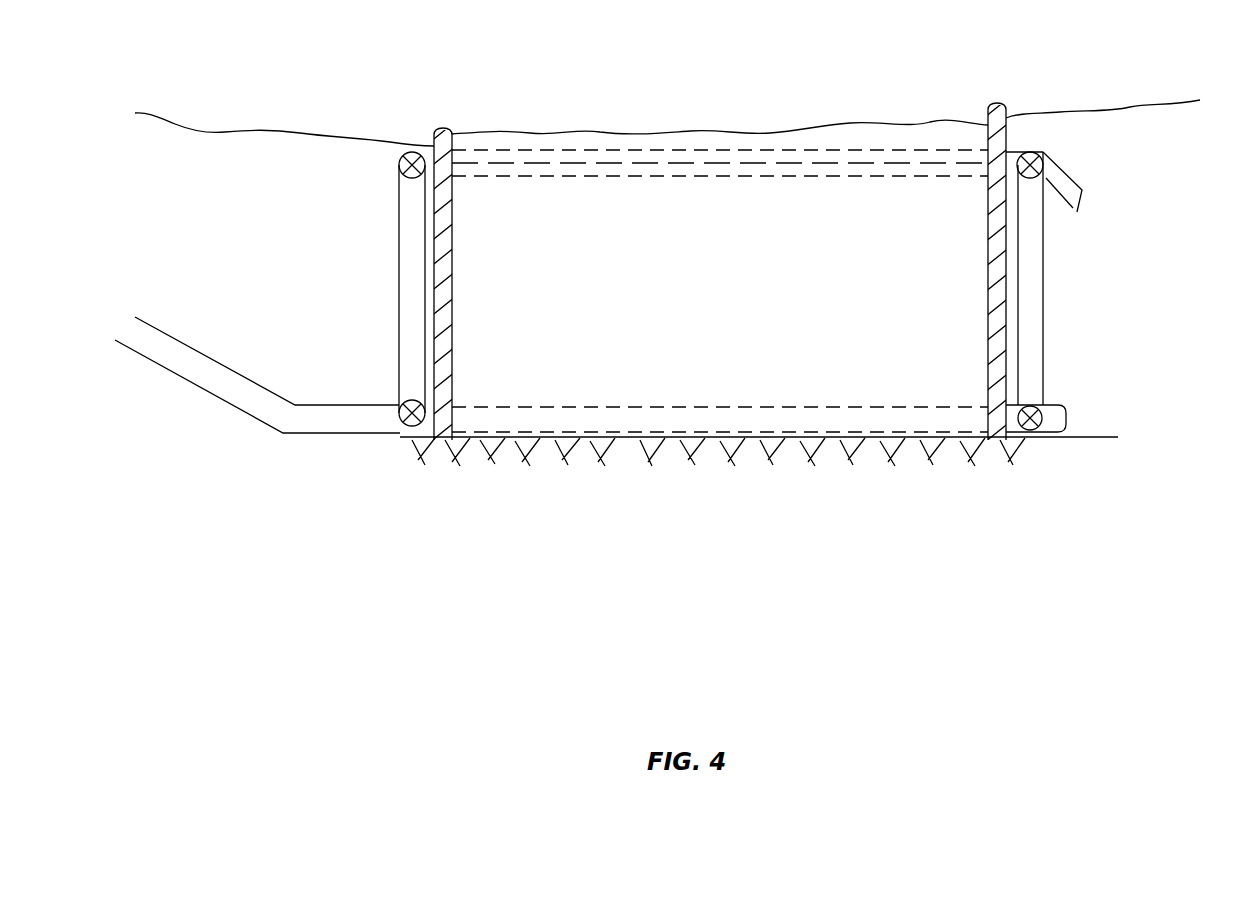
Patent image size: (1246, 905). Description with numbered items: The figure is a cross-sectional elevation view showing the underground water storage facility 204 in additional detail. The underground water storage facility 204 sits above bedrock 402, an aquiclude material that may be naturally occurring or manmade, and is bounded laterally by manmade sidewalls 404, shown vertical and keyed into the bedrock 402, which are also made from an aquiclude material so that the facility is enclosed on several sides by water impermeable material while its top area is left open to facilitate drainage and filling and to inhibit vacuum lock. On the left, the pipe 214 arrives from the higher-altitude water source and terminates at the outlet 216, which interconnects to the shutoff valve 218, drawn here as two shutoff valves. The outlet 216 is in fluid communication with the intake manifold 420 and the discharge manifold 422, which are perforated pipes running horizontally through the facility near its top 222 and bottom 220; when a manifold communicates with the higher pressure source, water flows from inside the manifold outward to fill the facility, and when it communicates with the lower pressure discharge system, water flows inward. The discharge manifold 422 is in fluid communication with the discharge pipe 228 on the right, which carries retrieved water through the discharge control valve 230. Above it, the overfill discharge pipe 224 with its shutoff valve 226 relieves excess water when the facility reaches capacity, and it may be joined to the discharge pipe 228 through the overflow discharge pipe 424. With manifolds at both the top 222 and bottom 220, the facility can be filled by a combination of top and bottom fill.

The underground water storage facility 204 is at (666, 264).
The pipe 214 is at (205, 375).
The outlet 216 is at (385, 163).
The shutoff valve 218 is at (385, 398).
The bottom 220 is at (712, 438).
The top 222 is at (600, 163).
The overfill discharge pipe 224 is at (1065, 160).
The shutoff valve 226 is at (1029, 148).
The discharge pipe 228 is at (1070, 418).
The discharge control valve 230 is at (1040, 440).
The bedrock 402 is at (962, 442).
The sidewalls 404 is at (1000, 378).
The intake manifold 420 is at (688, 150).
The discharge manifold 422 is at (584, 404).
The overflow discharge pipe 424 is at (1048, 250).